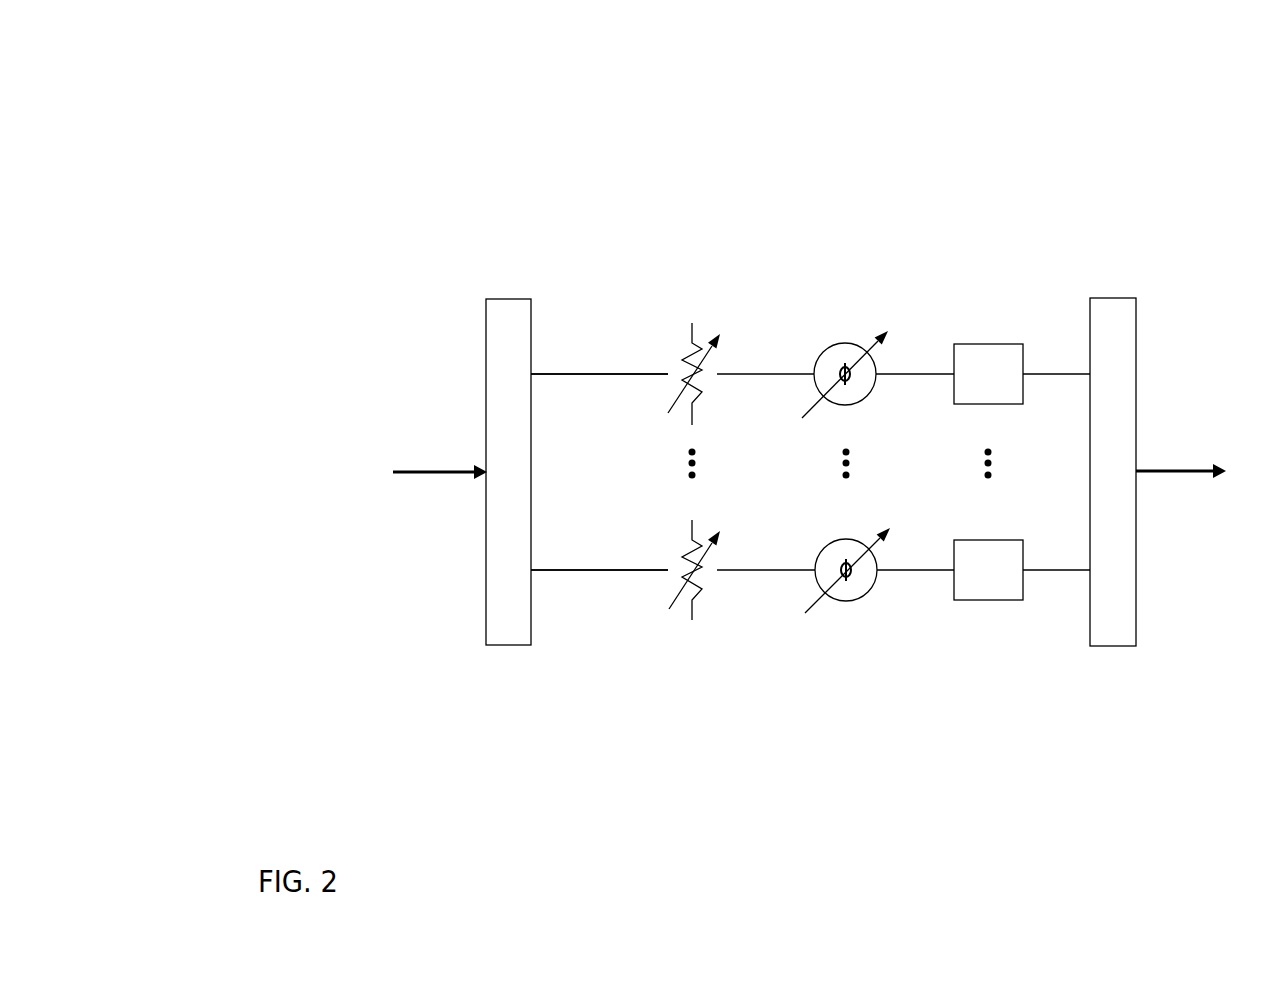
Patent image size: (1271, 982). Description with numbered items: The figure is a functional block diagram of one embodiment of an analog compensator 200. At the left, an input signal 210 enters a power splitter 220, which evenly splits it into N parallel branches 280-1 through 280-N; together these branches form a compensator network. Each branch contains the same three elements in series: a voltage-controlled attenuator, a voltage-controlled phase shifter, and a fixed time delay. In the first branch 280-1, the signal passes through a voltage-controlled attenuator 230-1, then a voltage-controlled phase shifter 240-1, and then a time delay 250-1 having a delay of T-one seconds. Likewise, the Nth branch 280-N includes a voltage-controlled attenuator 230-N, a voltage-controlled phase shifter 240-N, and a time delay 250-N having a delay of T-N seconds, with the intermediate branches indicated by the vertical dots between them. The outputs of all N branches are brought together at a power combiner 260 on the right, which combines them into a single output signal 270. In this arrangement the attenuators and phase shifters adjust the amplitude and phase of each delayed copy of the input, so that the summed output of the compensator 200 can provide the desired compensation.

The analog compensator 200 is at (374, 122).
The input signal 210 is at (413, 472).
The power splitter 220 is at (480, 306).
The voltage-controlled attenuator 230-1 is at (687, 322).
The voltage-controlled attenuator 230-N is at (688, 620).
The voltage-controlled phase shifter 240-1 is at (829, 347).
The voltage-controlled phase shifter 240-N is at (845, 600).
The time delay 250-1 is at (988, 344).
The time delay 250-N is at (990, 600).
The power combiner 260 is at (1089, 313).
The output signal 270 is at (1183, 471).
The branch 280-1 is at (562, 374).
The branch 280-N is at (560, 571).